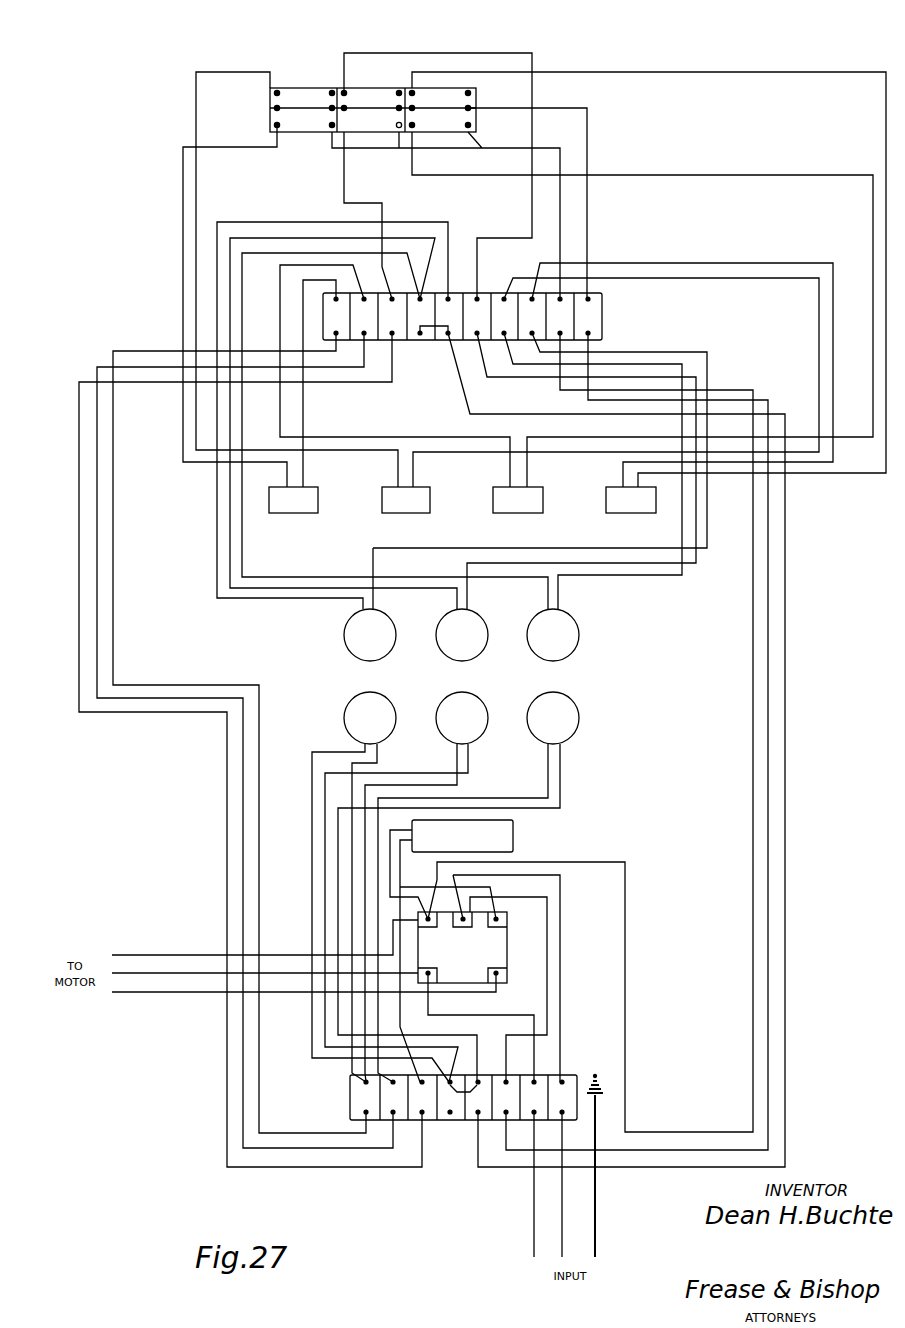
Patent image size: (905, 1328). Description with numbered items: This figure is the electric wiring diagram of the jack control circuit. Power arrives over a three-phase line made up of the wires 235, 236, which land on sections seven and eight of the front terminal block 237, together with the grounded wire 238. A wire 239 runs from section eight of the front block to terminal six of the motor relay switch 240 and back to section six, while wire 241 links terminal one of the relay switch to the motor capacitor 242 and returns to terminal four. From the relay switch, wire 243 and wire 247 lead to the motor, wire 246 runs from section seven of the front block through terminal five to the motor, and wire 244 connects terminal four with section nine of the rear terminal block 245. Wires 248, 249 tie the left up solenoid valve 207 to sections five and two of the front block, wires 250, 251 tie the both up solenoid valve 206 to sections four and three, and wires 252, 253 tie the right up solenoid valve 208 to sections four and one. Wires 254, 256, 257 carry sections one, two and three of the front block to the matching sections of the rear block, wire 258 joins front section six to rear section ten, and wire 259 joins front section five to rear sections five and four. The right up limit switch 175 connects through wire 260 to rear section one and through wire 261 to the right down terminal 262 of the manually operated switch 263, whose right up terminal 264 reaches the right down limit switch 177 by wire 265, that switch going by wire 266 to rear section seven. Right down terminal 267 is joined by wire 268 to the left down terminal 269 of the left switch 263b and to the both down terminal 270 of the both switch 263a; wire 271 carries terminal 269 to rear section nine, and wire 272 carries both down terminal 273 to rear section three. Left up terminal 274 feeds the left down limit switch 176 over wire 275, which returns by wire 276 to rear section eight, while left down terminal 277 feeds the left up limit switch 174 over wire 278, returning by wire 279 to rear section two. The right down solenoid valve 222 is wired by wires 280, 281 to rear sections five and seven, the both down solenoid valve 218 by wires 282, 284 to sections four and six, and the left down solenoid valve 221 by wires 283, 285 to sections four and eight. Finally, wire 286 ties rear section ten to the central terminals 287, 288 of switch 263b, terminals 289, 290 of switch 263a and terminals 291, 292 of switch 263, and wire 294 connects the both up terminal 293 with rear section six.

The manually operated switch 263 is at (257, 106).
The both "up" and "down" switch 263a is at (364, 144).
The left "up" and "down" switch 263b is at (449, 142).
The right "up" terminal 264 is at (278, 90).
The terminal of right "up" and "down" switch 292 is at (264, 106).
The terminal of right "up" and "down" switch 291 is at (330, 105).
The both "up" terminal 293 is at (333, 90).
The terminal of both "up" and "down" switch 290 is at (345, 90).
The both "down" terminal 273 is at (346, 107).
The terminal of both "up" and "down" switch 289 is at (399, 92).
The left "up" terminal 274 is at (414, 92).
The central terminal of left "up" and "down" switch 288 is at (414, 107).
The central terminal of left "up" and "down" switch 287 is at (470, 107).
The left "down" terminal 269 is at (470, 128).
The right "down" terminal 262 is at (277, 129).
The right "down" terminal 267 is at (331, 130).
The both "down" terminal 270 is at (399, 130).
The left "down" terminal 277 is at (413, 130).
The wire 265 is at (194, 133).
The wire 268 is at (381, 150).
The wire 271 is at (562, 222).
The wire 294 is at (533, 100).
The wire 272 is at (383, 212).
The wire 278 is at (708, 175).
The wire 275 is at (750, 72).
The wire 286 is at (600, 247).
The rear terminal block 245 is at (604, 312).
The wire 260 is at (304, 405).
The wire 279 is at (394, 437).
The wire 283 is at (241, 283).
The wire 282 is at (229, 532).
The wire 280 is at (218, 591).
The wire 266 is at (445, 452).
The wire 276 is at (833, 355).
The wire 261 is at (182, 455).
The wire 254 is at (260, 1103).
The wire 256 is at (242, 1120).
The wire 257 is at (370, 1170).
The wire 259 is at (789, 965).
The wire 284 is at (682, 580).
The wire 285 is at (708, 560).
The wire 281 is at (371, 558).
The wire 244 is at (626, 989).
The wire 258 is at (772, 1110).
The right "up" limit switch 175 is at (320, 492).
The right "down" limit switch 177 is at (432, 498).
The left "up" limit switch 174 is at (545, 496).
The left "down" limit switch 176 is at (606, 500).
The right "down" solenoid valve 222 is at (344, 635).
The both "down" solenoid valve 218 is at (445, 644).
The left "down" solenoid valve 221 is at (580, 634).
The solenoid valve 208 is at (352, 699).
The solenoid valve 206 is at (470, 700).
The solenoid valve 207 is at (580, 722).
The wire 250 is at (413, 772).
The wire 253 is at (324, 764).
The wire 251 is at (458, 785).
The wire 252 is at (364, 875).
The wire 249 is at (562, 778).
The wire 248 is at (338, 1028).
The motor capacitor 242 is at (513, 839).
The wire 241 is at (399, 841).
The motor relay switch 240 is at (507, 945).
The wire 239 is at (561, 978).
The wire 243 is at (184, 954).
The wire 246 is at (533, 1060).
The wire 247 is at (152, 995).
The front terminal block 237 is at (453, 1123).
The wire 235 is at (533, 1252).
The wire 236 is at (564, 1237).
The grounded wire 238 is at (596, 1187).